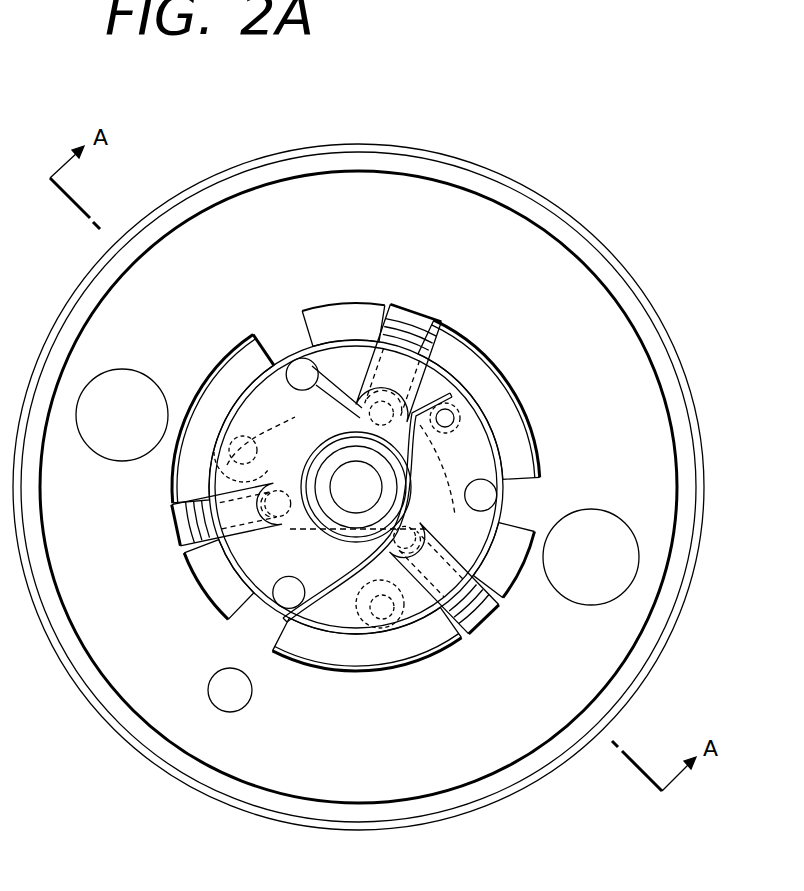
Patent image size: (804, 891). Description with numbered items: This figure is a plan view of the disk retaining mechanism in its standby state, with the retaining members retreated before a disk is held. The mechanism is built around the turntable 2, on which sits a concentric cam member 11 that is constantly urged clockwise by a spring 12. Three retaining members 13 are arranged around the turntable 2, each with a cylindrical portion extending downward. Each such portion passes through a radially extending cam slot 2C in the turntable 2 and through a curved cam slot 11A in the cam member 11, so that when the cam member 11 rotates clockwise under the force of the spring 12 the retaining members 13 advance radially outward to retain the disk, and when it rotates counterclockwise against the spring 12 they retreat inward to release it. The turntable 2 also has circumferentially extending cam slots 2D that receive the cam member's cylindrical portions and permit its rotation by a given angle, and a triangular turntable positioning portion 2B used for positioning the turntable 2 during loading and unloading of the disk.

The turntable 2 is at (452, 205).
The turntable positioning portion 2B is at (258, 565).
The cam slot 2C is at (482, 600).
The cam slot 2D is at (353, 620).
The cam member 11 is at (340, 358).
The curved cam slot 11A is at (200, 540).
The spring 12 is at (412, 445).
The retaining member 13 is at (405, 342).